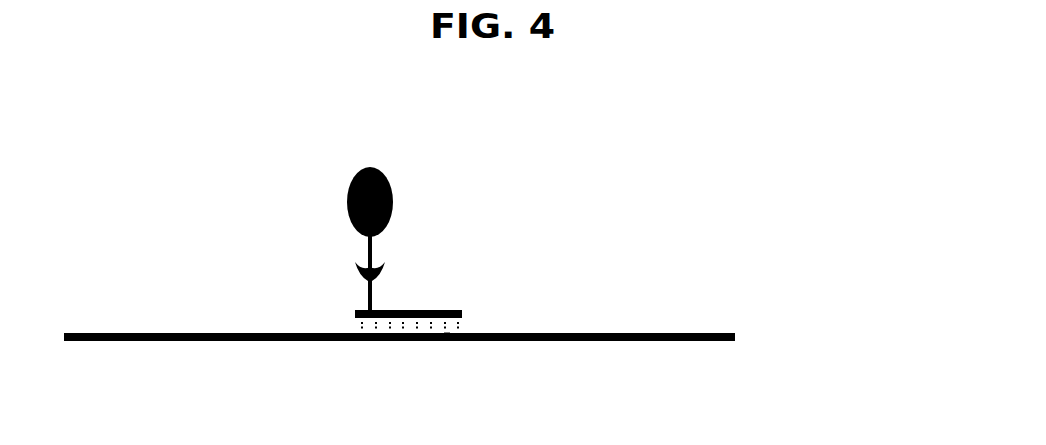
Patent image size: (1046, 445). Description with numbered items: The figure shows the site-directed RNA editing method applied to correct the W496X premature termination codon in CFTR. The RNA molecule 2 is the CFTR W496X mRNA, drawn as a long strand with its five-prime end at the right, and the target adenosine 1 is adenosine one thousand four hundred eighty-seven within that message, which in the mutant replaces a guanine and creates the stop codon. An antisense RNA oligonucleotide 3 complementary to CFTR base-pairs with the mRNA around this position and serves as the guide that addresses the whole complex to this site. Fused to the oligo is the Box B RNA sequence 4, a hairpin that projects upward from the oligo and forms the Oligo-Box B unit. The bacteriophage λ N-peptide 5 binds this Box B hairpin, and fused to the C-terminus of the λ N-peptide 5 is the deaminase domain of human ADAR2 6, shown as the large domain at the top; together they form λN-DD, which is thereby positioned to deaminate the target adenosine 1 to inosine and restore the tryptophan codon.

The target adenosine 1 is at (504, 341).
The RNA molecule 2 is at (447, 341).
The antisense RNA oligonucleotide 3 is at (462, 310).
The Box B RNA sequence 4 is at (366, 291).
The bacteriophage λ N-peptide 5 is at (373, 252).
The deaminase domain of human ADAR2 6 is at (394, 197).